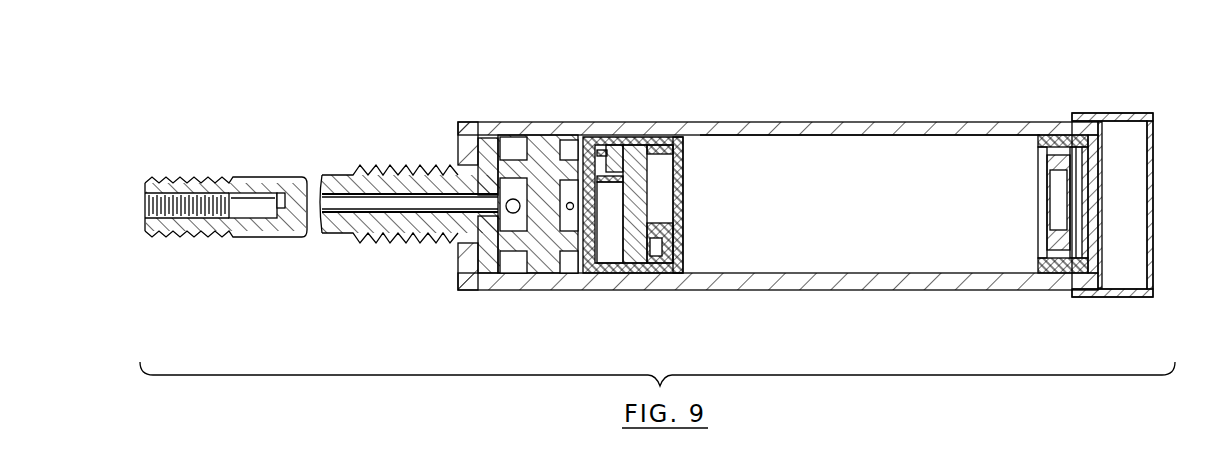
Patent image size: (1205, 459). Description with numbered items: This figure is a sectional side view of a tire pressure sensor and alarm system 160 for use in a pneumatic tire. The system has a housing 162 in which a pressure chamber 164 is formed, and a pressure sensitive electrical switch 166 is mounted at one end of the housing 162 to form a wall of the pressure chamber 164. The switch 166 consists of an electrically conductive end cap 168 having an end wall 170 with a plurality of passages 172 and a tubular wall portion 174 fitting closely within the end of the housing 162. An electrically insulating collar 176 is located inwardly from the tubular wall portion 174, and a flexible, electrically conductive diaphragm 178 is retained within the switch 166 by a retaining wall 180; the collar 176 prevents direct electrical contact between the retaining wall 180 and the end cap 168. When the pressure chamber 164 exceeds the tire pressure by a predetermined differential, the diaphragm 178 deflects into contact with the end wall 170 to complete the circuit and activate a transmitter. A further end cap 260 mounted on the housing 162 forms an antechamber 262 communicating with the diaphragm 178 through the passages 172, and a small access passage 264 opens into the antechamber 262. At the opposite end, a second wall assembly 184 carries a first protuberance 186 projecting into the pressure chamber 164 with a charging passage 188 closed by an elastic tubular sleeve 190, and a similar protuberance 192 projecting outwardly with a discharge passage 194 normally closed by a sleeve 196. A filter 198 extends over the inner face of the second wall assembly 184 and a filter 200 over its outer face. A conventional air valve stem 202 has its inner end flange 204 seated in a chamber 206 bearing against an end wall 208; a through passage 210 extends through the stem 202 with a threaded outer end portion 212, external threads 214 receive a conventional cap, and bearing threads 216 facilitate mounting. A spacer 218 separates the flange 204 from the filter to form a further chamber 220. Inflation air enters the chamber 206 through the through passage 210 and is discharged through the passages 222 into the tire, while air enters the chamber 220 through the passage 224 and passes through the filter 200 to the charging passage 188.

The pressure sensor system 160 is at (414, 80).
The housing 162 is at (808, 280).
The pressure chamber 164 is at (878, 133).
The pressure sensitive electrical switch 166 is at (1110, 184).
The end cap 168 is at (1100, 150).
The end wall 170 is at (1090, 212).
The passages 172 is at (1095, 175).
The tubular wall portion 174 is at (1060, 140).
The electrically insulating collar 176 is at (1057, 268).
The flexible diaphragm 178 is at (1086, 236).
The retaining wall 180 is at (1045, 215).
The second wall assembly 184 is at (641, 258).
The first protuberance 186 is at (684, 241).
The charging passage 188 is at (612, 248).
The tubular sleeve 190 is at (684, 258).
The protuberance 192 is at (564, 138).
The discharge passage 194 is at (637, 142).
The sleeve 196 is at (678, 187).
The filter 198 is at (676, 148).
The filter 200 is at (609, 142).
The air valve stem 202 is at (281, 238).
The inner end flange 204 is at (480, 266).
The chamber 206 is at (503, 140).
The end wall 208 is at (480, 145).
The through passage 210 is at (287, 194).
The threaded outer end portion 212 is at (143, 206).
The external threads 214 is at (188, 182).
The bearing threads 216 is at (386, 170).
The spacer 218 is at (552, 143).
The chamber 220 is at (562, 278).
The passages 222 is at (515, 138).
The passage 224 is at (571, 210).
The end cap 260 is at (1140, 300).
The antechamber 262 is at (1132, 118).
The access passage 264 is at (1151, 212).